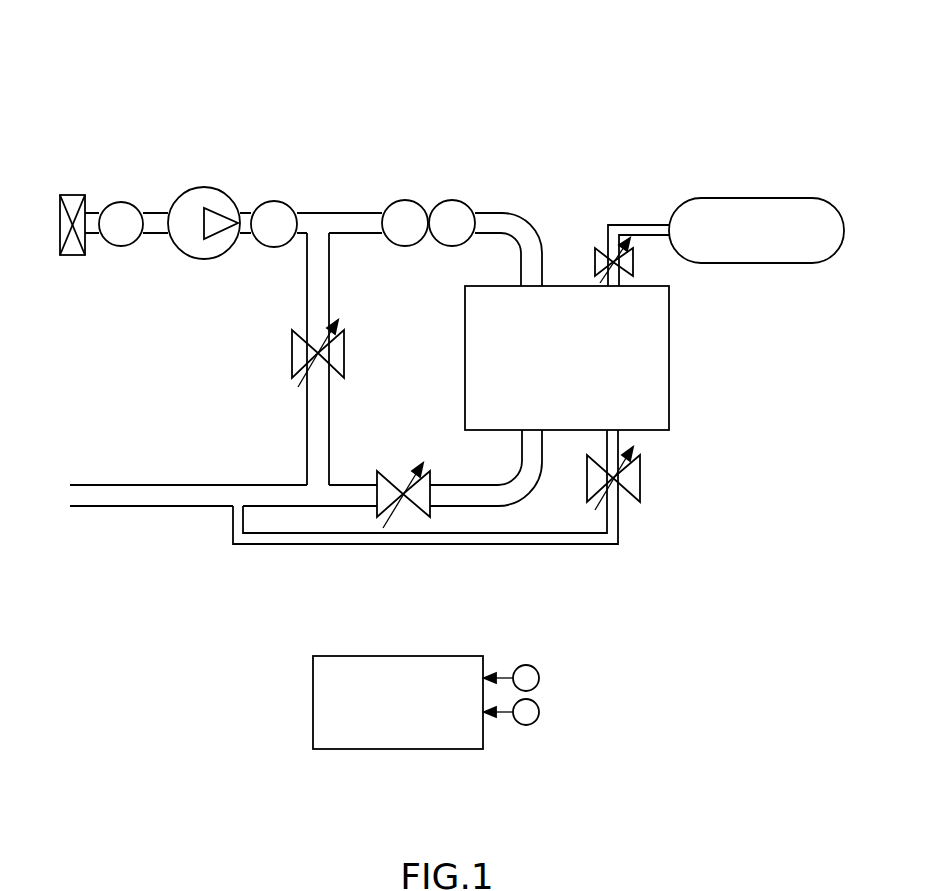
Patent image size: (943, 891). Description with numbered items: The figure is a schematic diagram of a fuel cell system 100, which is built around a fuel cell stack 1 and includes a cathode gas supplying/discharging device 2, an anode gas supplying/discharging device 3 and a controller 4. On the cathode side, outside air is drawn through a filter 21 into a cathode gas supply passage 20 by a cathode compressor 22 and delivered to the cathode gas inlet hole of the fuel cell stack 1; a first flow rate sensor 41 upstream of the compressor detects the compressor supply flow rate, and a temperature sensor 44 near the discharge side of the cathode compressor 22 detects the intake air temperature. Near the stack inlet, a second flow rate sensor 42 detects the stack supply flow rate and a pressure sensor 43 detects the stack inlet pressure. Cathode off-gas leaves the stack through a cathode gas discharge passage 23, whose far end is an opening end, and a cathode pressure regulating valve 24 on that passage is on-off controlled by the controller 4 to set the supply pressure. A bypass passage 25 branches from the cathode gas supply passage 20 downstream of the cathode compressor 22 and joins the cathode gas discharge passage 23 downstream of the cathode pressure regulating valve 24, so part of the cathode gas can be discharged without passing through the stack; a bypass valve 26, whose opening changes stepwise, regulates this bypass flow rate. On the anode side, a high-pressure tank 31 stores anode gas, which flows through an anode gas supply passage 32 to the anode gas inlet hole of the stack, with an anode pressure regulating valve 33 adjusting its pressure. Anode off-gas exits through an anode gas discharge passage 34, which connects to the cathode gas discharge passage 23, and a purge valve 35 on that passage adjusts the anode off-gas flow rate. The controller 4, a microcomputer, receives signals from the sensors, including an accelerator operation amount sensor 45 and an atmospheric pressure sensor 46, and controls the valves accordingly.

The fuel cell system 100 is at (101, 96).
The fuel cell stack 1 is at (669, 346).
The cathode gas supplying/discharging device 2 is at (287, 180).
The anode gas supplying/discharging device 3 is at (700, 170).
The controller 4 is at (432, 656).
The cathode gas supply passage 20 is at (358, 213).
The filter 21 is at (75, 195).
The cathode compressor 22 is at (205, 187).
The cathode gas discharge passage 23 is at (150, 485).
The cathode pressure regulating valve 24 is at (396, 470).
The bypass passage 25 is at (329, 287).
The bypass valve 26 is at (344, 350).
The high-pressure tank 31 is at (787, 198).
The anode gas supply passage 32 is at (640, 225).
The anode pressure regulating valve 33 is at (633, 262).
The anode gas discharge passage 34 is at (580, 545).
The purge valve 35 is at (640, 476).
The first flow rate sensor 41 is at (127, 202).
The second flow rate sensor 42 is at (406, 200).
The pressure sensor 43 is at (456, 200).
The temperature sensor 44 is at (274, 247).
The accelerator operation amount sensor 45 is at (539, 678).
The atmospheric pressure sensor 46 is at (539, 712).